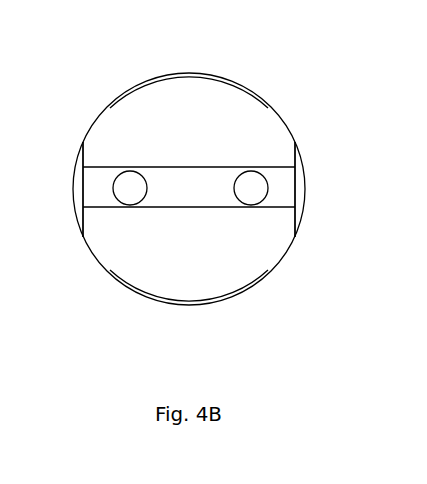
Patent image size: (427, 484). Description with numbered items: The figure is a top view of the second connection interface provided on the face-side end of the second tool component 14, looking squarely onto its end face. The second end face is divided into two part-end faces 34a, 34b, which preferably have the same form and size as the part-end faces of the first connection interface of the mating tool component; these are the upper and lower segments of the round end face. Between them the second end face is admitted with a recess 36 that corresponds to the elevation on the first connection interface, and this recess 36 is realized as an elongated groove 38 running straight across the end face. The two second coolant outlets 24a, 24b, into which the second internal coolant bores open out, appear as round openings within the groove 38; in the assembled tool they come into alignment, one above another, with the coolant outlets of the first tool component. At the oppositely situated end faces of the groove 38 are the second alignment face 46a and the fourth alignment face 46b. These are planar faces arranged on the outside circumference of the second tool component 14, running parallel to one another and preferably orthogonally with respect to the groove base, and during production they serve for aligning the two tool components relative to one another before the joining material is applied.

The second tool component 14 is at (252, 88).
The part-end face 34a is at (197, 85).
The part-end face 34b is at (190, 297).
The recess 36 is at (285, 183).
The elongated groove 38 is at (285, 183).
The second alignment face 46a is at (83, 193).
The fourth alignment face 46b is at (296, 207).
The second coolant outlet 24a is at (129, 192).
The second coolant outlet 24b is at (251, 192).